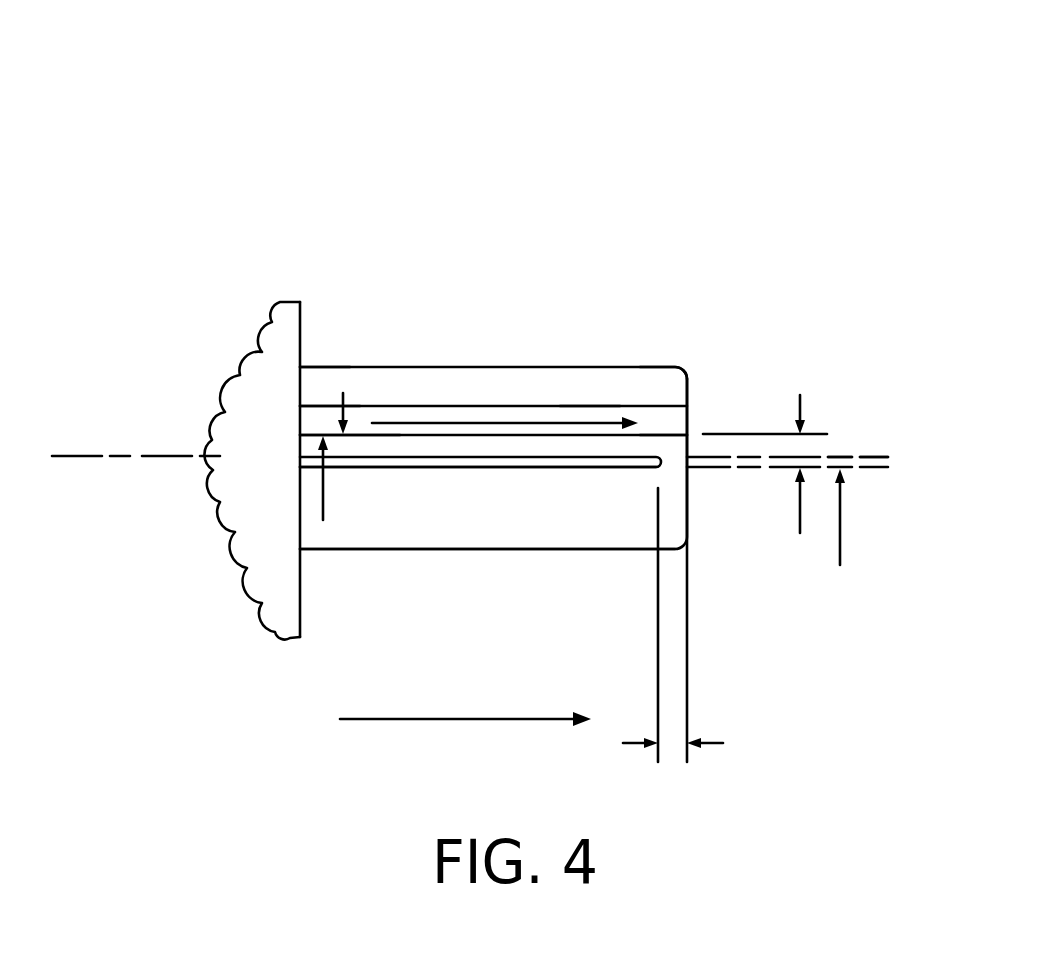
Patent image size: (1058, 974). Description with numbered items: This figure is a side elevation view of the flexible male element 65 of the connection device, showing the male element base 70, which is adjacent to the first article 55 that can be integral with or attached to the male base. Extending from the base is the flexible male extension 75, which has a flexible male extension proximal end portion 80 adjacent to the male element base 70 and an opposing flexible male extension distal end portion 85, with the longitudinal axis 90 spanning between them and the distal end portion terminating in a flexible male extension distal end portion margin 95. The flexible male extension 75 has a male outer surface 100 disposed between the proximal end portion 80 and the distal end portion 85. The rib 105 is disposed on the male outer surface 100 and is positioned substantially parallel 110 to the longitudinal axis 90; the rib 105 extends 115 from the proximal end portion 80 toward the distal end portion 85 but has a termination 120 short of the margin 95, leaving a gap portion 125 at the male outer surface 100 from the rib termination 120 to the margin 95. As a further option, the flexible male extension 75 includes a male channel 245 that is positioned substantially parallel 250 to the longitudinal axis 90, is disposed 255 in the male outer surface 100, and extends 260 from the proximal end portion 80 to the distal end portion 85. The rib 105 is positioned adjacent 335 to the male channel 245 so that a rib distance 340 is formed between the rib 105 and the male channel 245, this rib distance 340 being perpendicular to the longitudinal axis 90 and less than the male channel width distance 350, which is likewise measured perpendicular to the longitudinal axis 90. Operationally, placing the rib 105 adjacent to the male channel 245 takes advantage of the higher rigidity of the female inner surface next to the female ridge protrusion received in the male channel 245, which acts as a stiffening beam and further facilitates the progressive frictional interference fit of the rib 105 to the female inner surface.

The flexible male element 65 is at (580, 80).
The first article 55 is at (176, 471).
The male element base 70 is at (276, 469).
The flexible male extension 75 is at (550, 367).
The flexible male extension proximal end portion 80 is at (325, 367).
The flexible male extension distal end portion 85 is at (653, 367).
The flexible male extension distal end portion margin 95 is at (682, 392).
The male outer surface 100 is at (493, 404).
The rib 105 is at (528, 468).
The substantially parallel positioning of the rib 110 is at (846, 447).
The rib extension 115 is at (530, 719).
The rib termination 120 is at (653, 488).
The gap portion 125 is at (696, 744).
The male channel 245 is at (677, 422).
The substantially parallel positioning of the male channel 250 is at (765, 451).
The disposition of the male channel 255 is at (355, 434).
The male channel extension 260 is at (410, 423).
The adjacent positioning of the rib 335 is at (347, 481).
The rib distance 340 is at (478, 583).
The male channel width distance 350 is at (319, 393).
The longitudinal axis 90 is at (862, 468).